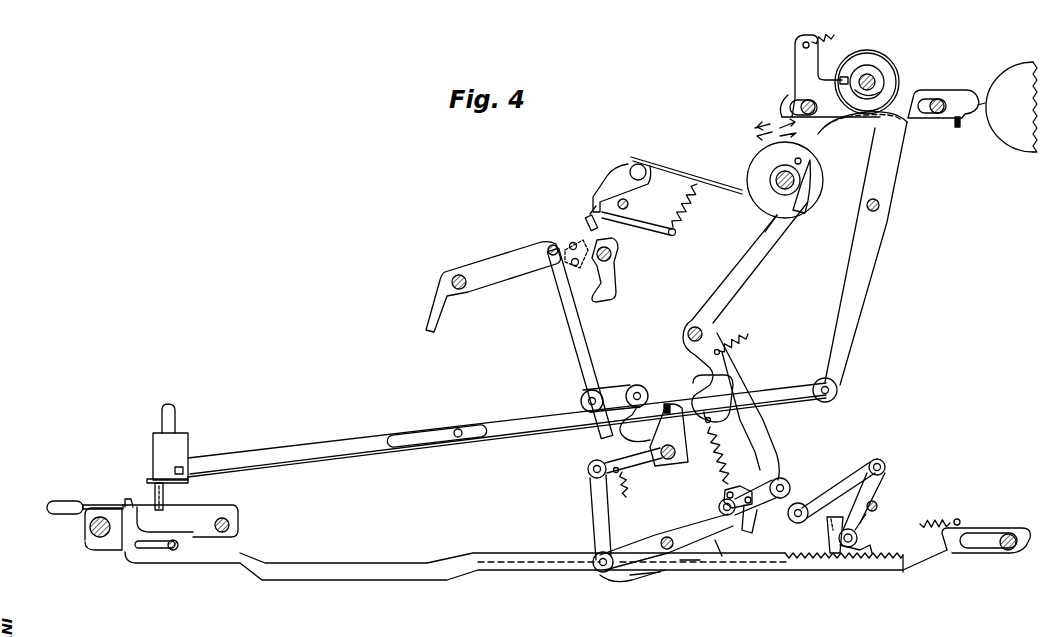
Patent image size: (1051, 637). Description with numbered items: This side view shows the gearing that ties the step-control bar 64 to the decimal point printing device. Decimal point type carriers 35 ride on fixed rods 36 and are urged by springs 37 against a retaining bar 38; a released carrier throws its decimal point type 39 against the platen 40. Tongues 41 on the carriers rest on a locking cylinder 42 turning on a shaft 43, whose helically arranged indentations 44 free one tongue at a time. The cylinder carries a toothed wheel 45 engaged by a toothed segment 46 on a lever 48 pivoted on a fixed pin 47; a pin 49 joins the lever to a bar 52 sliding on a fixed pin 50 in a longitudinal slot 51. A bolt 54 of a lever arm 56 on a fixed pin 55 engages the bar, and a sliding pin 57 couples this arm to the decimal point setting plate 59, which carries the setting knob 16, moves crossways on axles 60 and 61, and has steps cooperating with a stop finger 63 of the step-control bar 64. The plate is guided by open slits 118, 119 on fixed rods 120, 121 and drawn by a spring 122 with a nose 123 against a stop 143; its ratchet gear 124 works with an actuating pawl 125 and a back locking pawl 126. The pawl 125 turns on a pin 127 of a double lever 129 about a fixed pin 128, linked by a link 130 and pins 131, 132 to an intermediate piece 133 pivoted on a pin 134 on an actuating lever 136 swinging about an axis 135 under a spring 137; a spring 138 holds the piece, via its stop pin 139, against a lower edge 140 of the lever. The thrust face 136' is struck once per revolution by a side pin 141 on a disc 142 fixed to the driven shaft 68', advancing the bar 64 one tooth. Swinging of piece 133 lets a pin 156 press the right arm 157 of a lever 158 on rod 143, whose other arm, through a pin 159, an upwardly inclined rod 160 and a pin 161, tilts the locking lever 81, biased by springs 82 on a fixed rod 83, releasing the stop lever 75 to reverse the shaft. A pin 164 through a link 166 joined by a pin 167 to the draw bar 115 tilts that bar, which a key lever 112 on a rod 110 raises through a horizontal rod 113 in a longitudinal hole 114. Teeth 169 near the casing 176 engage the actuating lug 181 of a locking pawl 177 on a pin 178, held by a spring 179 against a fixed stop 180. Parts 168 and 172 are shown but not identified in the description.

The setting knob 16 is at (66, 503).
The decimal point type carriers 35 is at (800, 70).
The fixed rods 36 is at (792, 103).
The springs 37 is at (834, 35).
The retaining bar 38 is at (959, 128).
The decimal point type 39 is at (980, 108).
The platen 40 is at (995, 92).
The tongues 41 is at (842, 77).
The locking cylinder 42 is at (872, 75).
The shaft 43 is at (893, 72).
The indentations 44 is at (852, 72).
The toothed wheel 45 is at (875, 80).
The cam arc 46 is at (895, 112).
The fixed pin 47 is at (880, 206).
The lever 48 is at (867, 292).
The pin 49 is at (836, 394).
The fixed pin 50 is at (458, 427).
The longitudinal slot 51 is at (400, 437).
The bar 52 is at (358, 438).
The bolt 54 is at (183, 468).
The fixed pin 55 is at (171, 416).
The lever arm 56 is at (150, 480).
The sliding pin 57 is at (165, 496).
The decimal point setting plate 59 is at (218, 505).
The axle 60 is at (89, 528).
The axle 61 is at (229, 524).
The stop finger 63 is at (129, 498).
The step-control bar 64 is at (470, 556).
The driven shaft 68' is at (816, 184).
The stop lever 75 is at (667, 403).
The locking lever 81 is at (675, 438).
The springs 82 is at (593, 478).
The fixed rod 83 is at (627, 478).
The rod 110 is at (456, 274).
The key lever 112 is at (500, 288).
The horizontal rod 113 is at (569, 247).
The longitudinal hole 114 is at (550, 246).
The draw bar 115 is at (572, 318).
The open slit 118 is at (152, 549).
The open slit 119 is at (976, 534).
The fixed rod 120 is at (176, 550).
The fixed rod 121 is at (1006, 551).
The spring 122 is at (932, 530).
The nose 123 is at (692, 562).
The ratchet gear 124 is at (790, 562).
The actuating pawl 125 is at (904, 575).
The back locking pawl 126 is at (828, 556).
The pin 127 is at (856, 538).
The fixed pin 128 is at (878, 505).
The double lever 129 is at (860, 525).
The link 130 is at (848, 482).
The pin 131 is at (880, 462).
The pin 132 is at (797, 523).
The intermediate piece 133 is at (730, 484).
The pin 134 is at (784, 480).
The axis 135 is at (687, 332).
The actuating lever 136 is at (745, 311).
The thrust face 136' is at (824, 190).
The spring 137 is at (750, 334).
The spring 138 is at (646, 460).
The stop pin 139 is at (746, 520).
The lower edge 140 is at (726, 494).
The side pin 141 is at (802, 160).
The disc 142 is at (760, 168).
The fixed rod 143 is at (660, 540).
The pin 156 is at (719, 507).
The right arm 157 is at (722, 545).
The lever 158 is at (642, 574).
The pin 159 is at (600, 572).
The upwardly inclined rod 160 is at (597, 530).
The pin 161 is at (590, 467).
The pin 164 is at (638, 392).
The link 166 is at (614, 388).
The pin 167 is at (582, 398).
The pin 168 is at (612, 256).
The teeth 169 is at (592, 214).
The lever 172 is at (612, 290).
The casing 176 is at (688, 172).
The locking pawl 177 is at (670, 236).
The pin 178 is at (629, 204).
The spring 179 is at (688, 216).
The fixed stop 180 is at (641, 168).
The actuating lug 181 is at (598, 226).